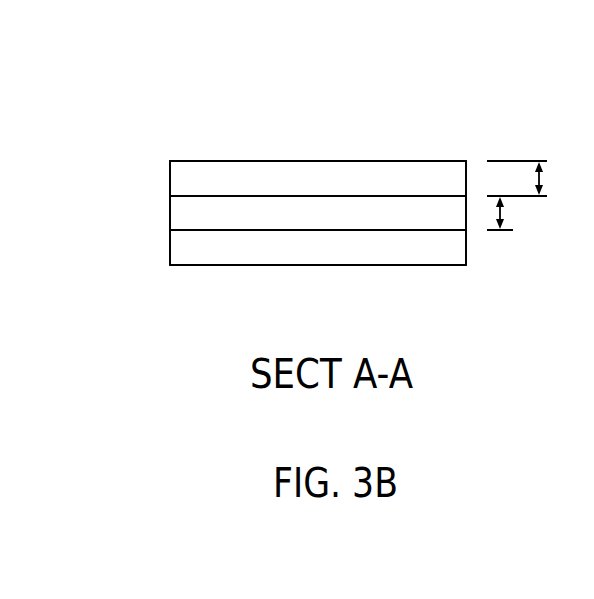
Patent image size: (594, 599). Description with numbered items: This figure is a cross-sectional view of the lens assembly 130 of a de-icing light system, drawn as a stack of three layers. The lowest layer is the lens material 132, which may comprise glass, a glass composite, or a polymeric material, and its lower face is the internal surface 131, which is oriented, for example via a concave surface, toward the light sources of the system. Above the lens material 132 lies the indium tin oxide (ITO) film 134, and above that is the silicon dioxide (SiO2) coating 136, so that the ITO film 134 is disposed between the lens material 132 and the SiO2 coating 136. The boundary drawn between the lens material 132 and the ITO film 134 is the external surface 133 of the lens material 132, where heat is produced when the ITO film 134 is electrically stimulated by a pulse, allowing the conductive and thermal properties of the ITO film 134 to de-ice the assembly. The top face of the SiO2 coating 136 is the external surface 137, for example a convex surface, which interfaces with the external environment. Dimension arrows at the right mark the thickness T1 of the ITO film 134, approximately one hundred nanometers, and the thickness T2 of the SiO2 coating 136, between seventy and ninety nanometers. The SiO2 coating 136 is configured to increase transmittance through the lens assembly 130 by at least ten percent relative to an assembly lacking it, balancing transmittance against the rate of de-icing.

The lens assembly 130 is at (193, 65).
The internal surface 131 is at (228, 266).
The lens material 132 is at (197, 248).
The external surface 133 is at (273, 230).
The indium tin oxide (ITO) film 134 is at (197, 215).
The silicon dioxide (SiO2) coating 136 is at (190, 180).
The external surface 137 is at (333, 161).
The thickness of the ITO film T1 is at (518, 213).
The thickness of the SiO2 coating T2 is at (537, 178).